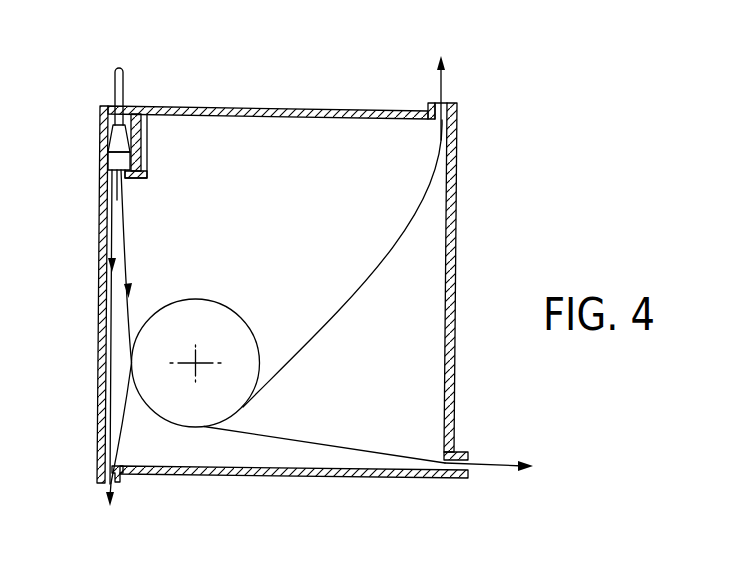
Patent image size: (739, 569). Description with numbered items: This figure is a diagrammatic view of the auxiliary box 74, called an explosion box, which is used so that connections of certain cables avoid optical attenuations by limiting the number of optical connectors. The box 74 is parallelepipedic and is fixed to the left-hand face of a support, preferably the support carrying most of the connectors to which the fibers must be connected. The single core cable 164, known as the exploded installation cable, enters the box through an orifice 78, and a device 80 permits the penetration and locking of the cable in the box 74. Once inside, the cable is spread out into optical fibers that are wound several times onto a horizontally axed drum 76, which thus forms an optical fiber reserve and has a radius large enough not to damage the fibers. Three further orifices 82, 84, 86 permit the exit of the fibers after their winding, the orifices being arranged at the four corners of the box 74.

The single core cable 164 is at (114, 76).
The orifice 78 is at (121, 100).
The device 80 is at (156, 149).
The auxiliary box 74 is at (468, 191).
The drum 76 is at (217, 319).
The orifice 82 is at (98, 477).
The orifice 84 is at (469, 462).
The orifice 86 is at (438, 104).